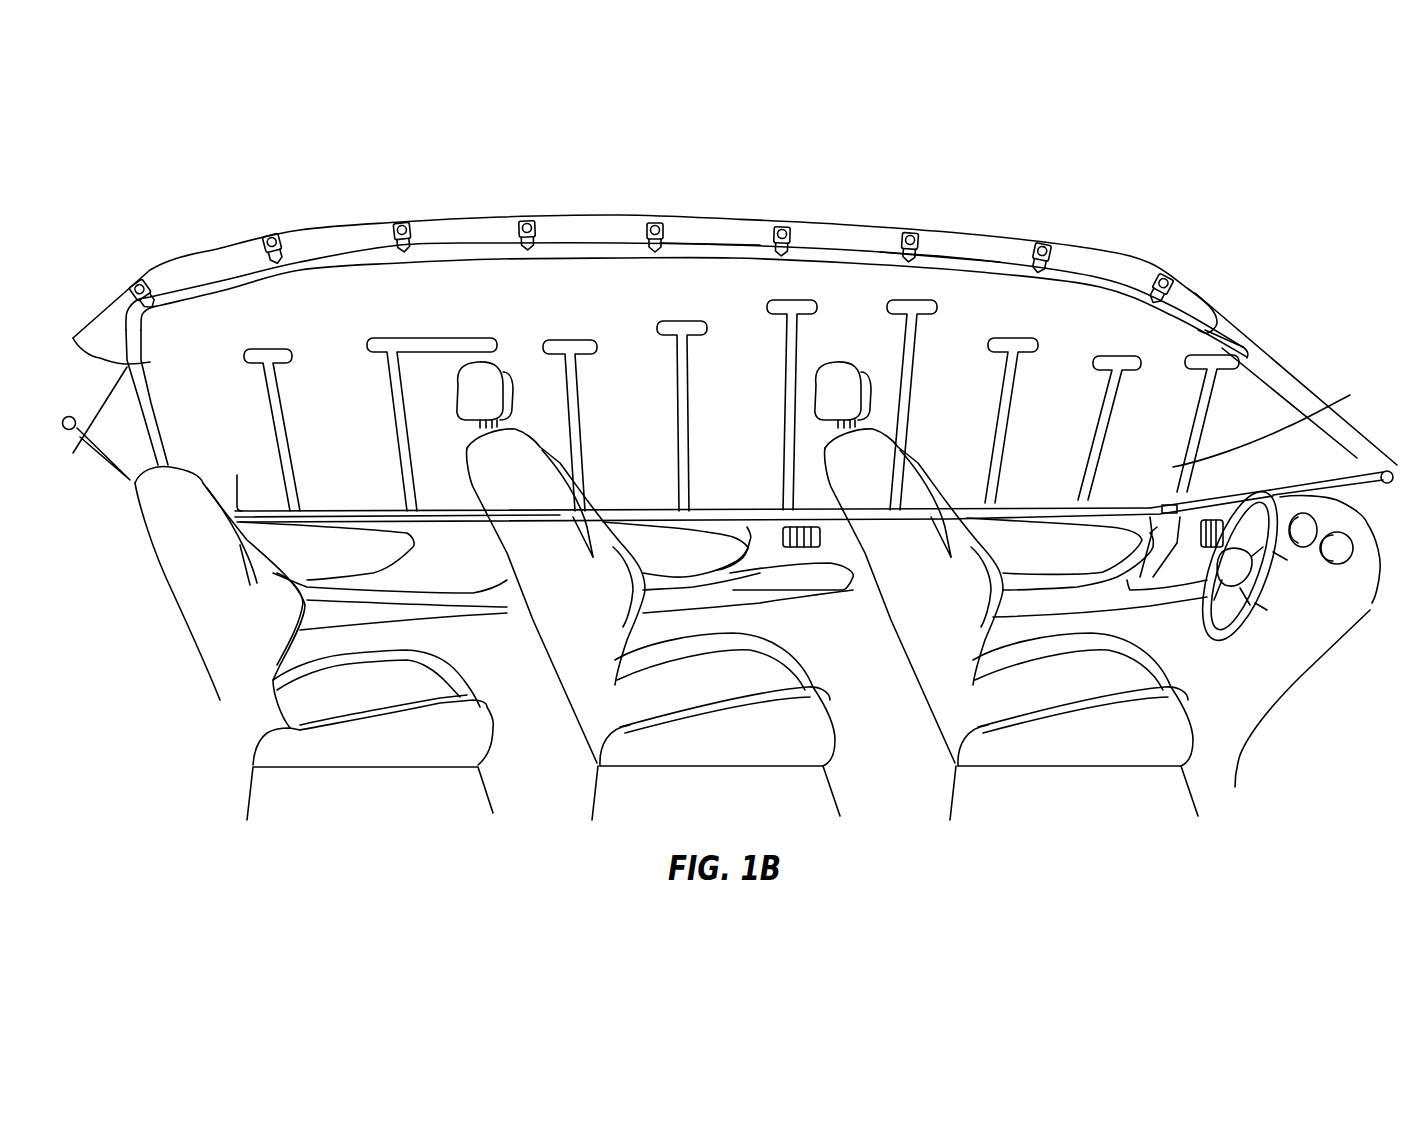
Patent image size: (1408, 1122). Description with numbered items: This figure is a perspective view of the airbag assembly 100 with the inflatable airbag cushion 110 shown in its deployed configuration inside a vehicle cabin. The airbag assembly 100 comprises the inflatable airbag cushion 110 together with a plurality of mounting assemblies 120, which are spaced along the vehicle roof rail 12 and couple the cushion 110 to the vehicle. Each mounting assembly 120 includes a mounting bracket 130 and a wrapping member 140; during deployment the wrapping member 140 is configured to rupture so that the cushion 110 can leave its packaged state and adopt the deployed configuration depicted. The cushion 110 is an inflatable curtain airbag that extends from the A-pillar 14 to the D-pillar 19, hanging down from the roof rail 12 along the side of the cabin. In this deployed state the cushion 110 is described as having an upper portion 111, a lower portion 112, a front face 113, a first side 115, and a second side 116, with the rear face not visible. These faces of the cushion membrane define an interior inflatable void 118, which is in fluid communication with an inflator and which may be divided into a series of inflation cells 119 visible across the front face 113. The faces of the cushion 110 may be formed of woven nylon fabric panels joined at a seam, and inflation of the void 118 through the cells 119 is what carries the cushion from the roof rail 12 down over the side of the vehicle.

The airbag assembly 100 is at (1090, 190).
The inflatable airbag cushion 110 is at (962, 250).
The vehicle roof rail 12 is at (340, 233).
The mounting assembly 120 is at (767, 235).
The mounting bracket 130 is at (768, 228).
The wrapping member 140 is at (783, 253).
The front face 113 is at (680, 297).
The inflation cells 119 is at (538, 373).
The interior inflatable void 118 is at (847, 310).
The upper portion 111 is at (1152, 327).
The second side 116 is at (1173, 343).
The A-pillar 14 is at (1293, 377).
The lower portion 112 is at (1280, 424).
The D-pillar 19 is at (99, 328).
The first side 115 is at (74, 337).